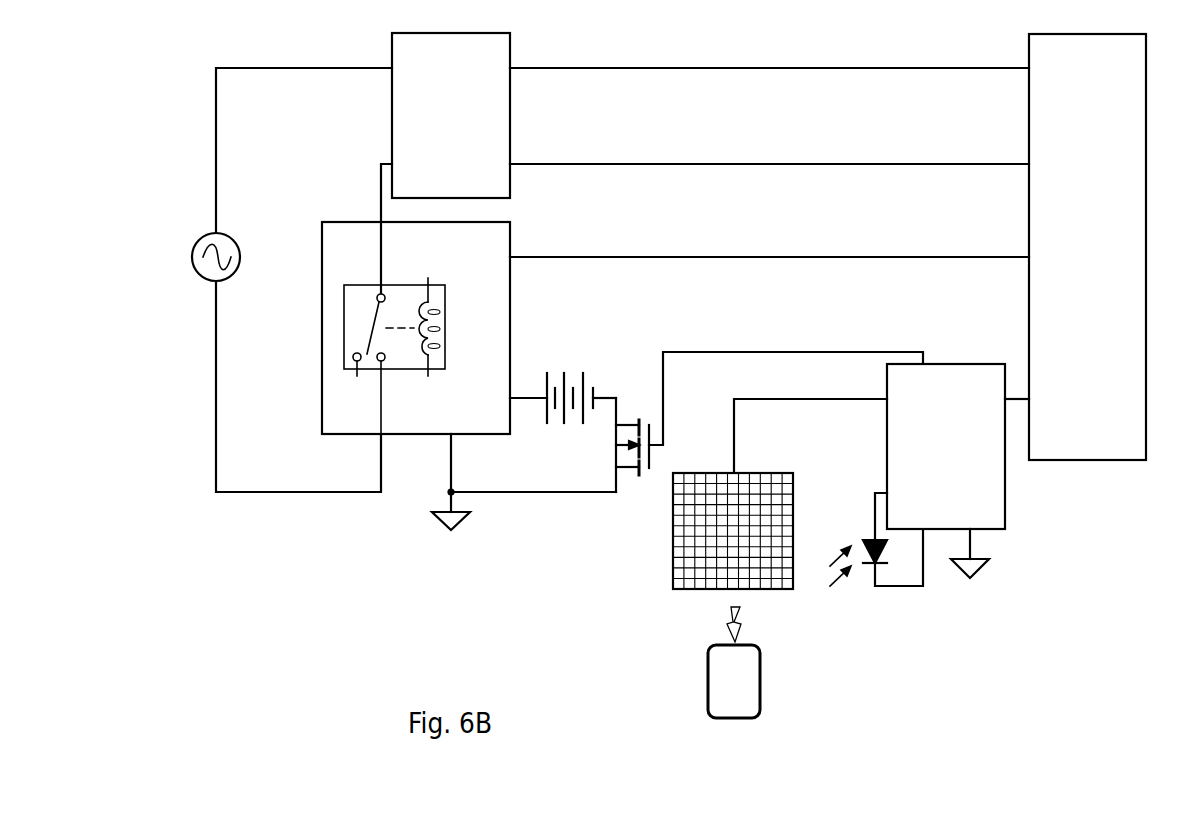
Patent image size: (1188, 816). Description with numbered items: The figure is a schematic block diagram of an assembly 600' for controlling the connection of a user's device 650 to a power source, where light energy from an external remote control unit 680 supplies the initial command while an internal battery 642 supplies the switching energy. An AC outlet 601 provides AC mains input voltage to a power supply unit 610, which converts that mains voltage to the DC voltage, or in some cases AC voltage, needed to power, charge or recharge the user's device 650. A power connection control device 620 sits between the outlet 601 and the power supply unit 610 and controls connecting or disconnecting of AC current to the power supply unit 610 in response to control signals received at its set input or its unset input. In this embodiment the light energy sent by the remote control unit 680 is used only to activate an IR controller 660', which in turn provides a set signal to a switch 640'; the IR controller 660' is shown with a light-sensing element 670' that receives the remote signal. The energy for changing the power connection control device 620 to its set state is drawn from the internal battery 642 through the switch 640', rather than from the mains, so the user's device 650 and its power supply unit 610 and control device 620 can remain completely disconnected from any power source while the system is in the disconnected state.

The assembly 600' is at (552, 291).
The AC outlet 601 is at (202, 277).
The power supply unit 610 is at (433, 134).
The power connection control device 620 is at (433, 268).
The internal battery 642 is at (565, 374).
The switch 640' is at (632, 407).
The IR sensor grid 670' is at (733, 511).
The IR controller 660' is at (917, 475).
The user's device 650 is at (1072, 280).
The remote control unit 680 is at (703, 682).